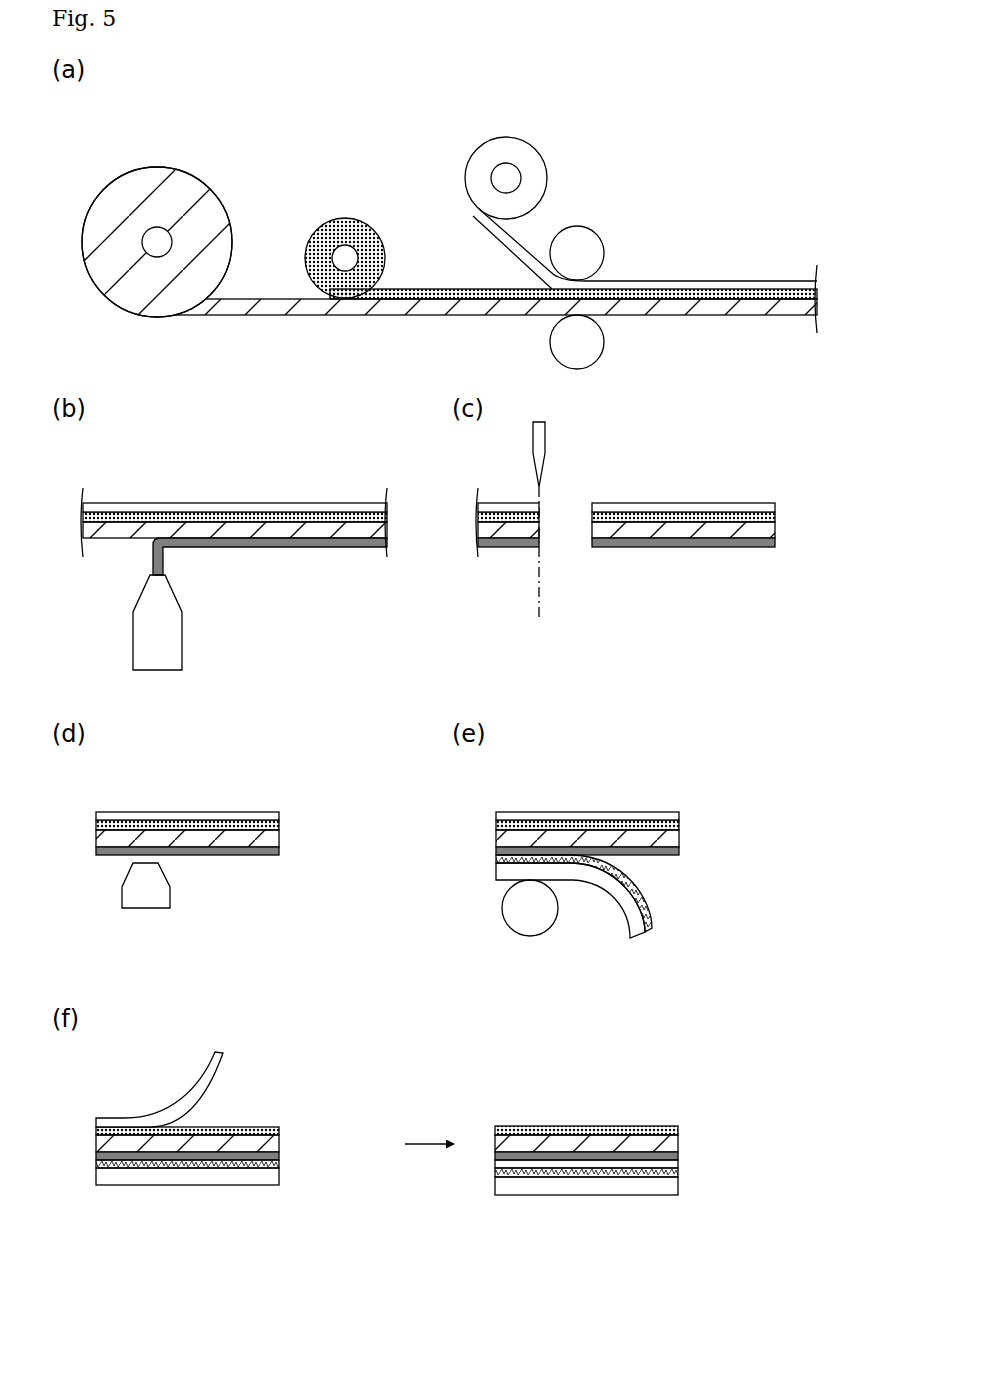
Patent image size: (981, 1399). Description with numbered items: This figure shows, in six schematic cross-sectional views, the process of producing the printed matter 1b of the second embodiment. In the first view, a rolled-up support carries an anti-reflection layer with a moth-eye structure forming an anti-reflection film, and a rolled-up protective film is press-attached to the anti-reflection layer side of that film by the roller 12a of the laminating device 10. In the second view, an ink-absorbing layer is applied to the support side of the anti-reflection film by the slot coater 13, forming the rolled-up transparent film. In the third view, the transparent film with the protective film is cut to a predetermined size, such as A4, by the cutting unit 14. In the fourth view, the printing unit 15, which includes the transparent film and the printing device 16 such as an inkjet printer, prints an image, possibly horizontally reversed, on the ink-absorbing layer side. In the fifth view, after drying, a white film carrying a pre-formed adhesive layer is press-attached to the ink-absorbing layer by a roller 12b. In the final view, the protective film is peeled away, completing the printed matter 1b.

The printed matter 1b is at (626, 1151).
The laminating device 10 is at (629, 226).
The roller 12a is at (580, 243).
The roller 12b is at (520, 923).
The slot coater 13 is at (147, 635).
The cutting unit 14 is at (540, 440).
The printing unit 15 is at (234, 853).
The printing device 16 is at (148, 900).